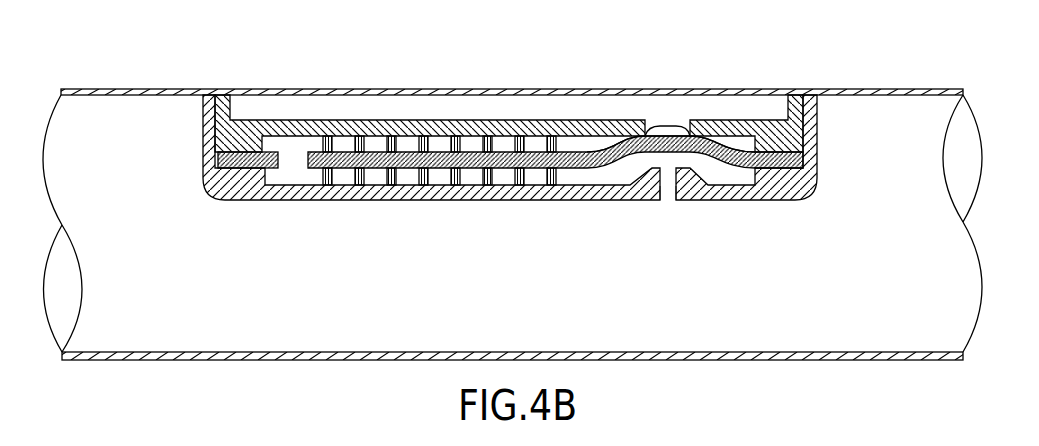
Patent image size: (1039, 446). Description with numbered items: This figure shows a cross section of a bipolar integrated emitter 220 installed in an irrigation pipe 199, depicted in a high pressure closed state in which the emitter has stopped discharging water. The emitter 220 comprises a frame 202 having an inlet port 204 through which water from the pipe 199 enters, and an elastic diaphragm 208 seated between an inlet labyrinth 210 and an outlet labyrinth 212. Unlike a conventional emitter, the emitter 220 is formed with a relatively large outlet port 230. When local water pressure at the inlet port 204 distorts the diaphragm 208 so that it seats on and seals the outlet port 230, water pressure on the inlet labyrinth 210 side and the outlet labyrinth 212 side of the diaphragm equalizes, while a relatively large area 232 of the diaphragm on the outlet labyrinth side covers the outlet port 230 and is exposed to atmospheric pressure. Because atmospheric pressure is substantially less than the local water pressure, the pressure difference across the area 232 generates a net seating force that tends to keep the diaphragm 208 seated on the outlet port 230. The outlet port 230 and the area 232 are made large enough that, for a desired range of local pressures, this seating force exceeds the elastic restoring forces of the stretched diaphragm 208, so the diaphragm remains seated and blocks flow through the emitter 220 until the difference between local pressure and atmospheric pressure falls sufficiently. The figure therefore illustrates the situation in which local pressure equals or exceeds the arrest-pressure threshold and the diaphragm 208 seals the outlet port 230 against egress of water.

The irrigation pipe 199 is at (107, 89).
The frame 202 is at (801, 178).
The inlet port 204 is at (668, 201).
The elastic diaphragm 208 is at (593, 138).
The inlet labyrinth 210 is at (348, 177).
The outlet labyrinth 212 is at (370, 138).
The integrated emitter 220 is at (830, 115).
The outlet port 230 is at (680, 128).
The area 232 is at (668, 124).